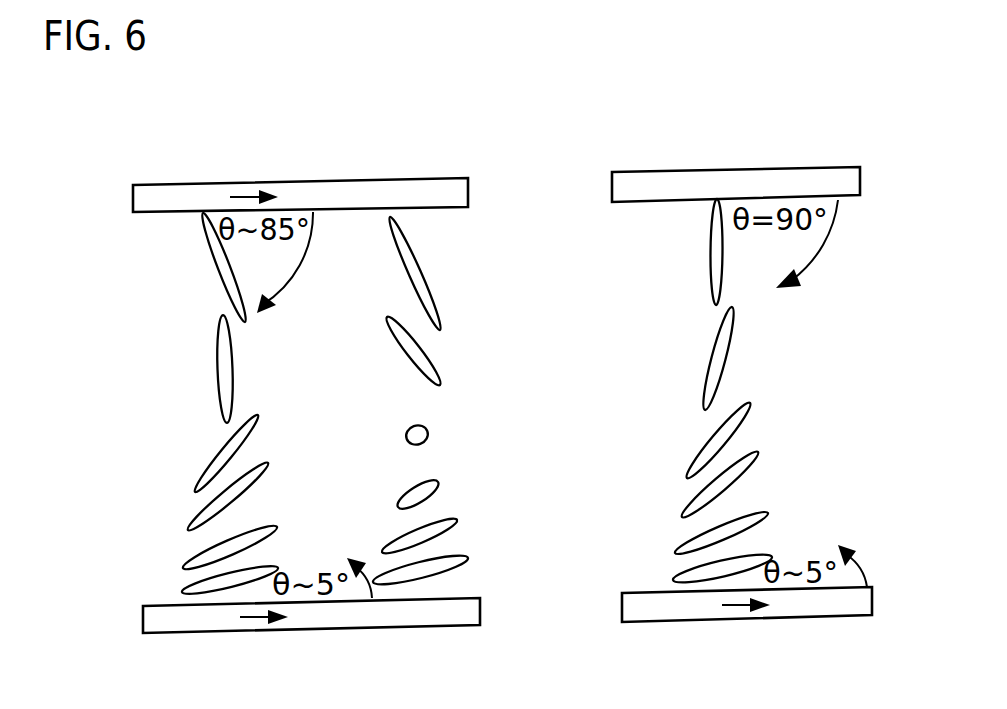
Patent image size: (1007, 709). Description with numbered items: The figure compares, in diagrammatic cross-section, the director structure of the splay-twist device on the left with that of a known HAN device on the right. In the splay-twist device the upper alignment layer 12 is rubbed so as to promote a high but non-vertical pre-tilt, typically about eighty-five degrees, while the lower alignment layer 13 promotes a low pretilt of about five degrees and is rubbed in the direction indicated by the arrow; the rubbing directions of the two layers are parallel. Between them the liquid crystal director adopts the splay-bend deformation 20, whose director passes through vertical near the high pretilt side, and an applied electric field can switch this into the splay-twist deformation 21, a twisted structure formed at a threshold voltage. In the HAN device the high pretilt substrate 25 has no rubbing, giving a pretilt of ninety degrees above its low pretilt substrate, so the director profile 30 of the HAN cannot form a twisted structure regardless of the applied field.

The alignment layer 12 is at (441, 185).
The alignment layer 13 is at (457, 618).
The splay-bend deformation 20 is at (183, 383).
The splay-twist deformation 21 is at (455, 422).
The high pretilt substrate 25 is at (633, 182).
The liquid crystal molecules (alternative) 30 is at (775, 363).